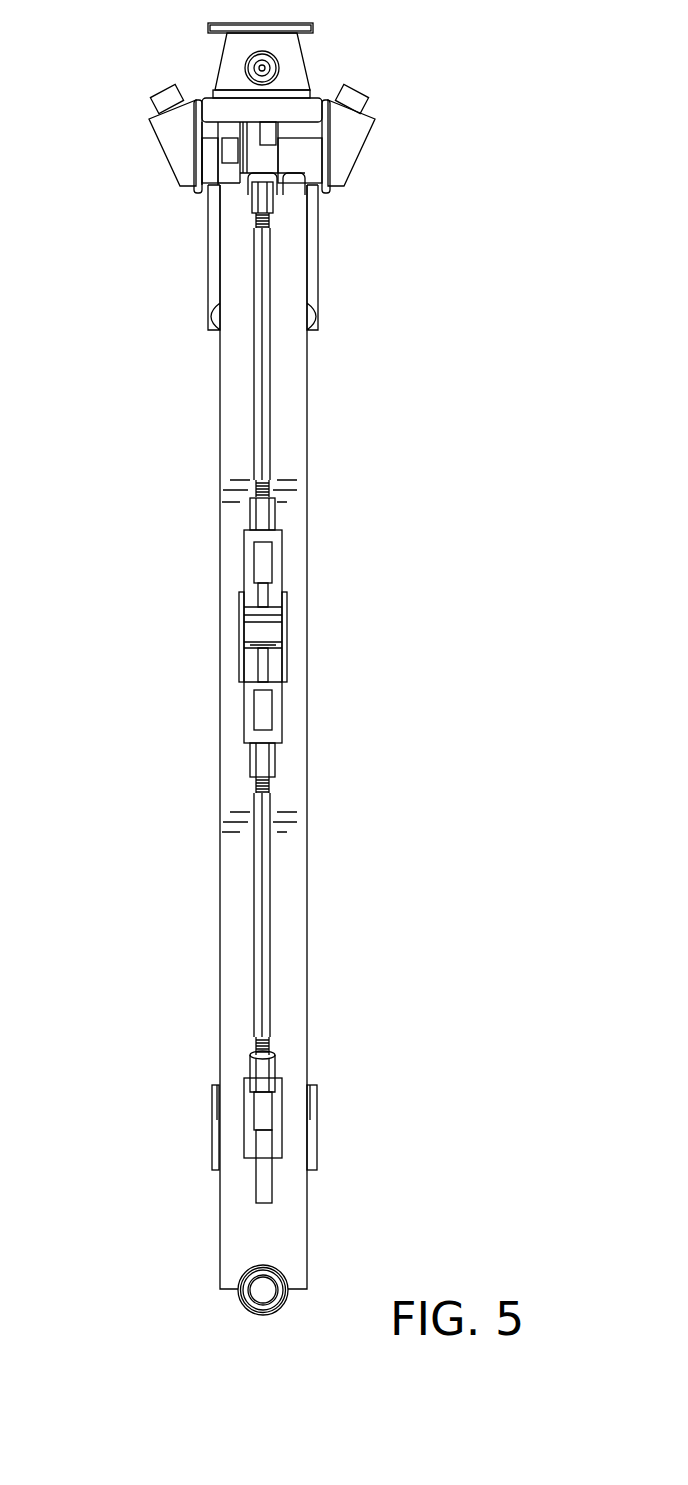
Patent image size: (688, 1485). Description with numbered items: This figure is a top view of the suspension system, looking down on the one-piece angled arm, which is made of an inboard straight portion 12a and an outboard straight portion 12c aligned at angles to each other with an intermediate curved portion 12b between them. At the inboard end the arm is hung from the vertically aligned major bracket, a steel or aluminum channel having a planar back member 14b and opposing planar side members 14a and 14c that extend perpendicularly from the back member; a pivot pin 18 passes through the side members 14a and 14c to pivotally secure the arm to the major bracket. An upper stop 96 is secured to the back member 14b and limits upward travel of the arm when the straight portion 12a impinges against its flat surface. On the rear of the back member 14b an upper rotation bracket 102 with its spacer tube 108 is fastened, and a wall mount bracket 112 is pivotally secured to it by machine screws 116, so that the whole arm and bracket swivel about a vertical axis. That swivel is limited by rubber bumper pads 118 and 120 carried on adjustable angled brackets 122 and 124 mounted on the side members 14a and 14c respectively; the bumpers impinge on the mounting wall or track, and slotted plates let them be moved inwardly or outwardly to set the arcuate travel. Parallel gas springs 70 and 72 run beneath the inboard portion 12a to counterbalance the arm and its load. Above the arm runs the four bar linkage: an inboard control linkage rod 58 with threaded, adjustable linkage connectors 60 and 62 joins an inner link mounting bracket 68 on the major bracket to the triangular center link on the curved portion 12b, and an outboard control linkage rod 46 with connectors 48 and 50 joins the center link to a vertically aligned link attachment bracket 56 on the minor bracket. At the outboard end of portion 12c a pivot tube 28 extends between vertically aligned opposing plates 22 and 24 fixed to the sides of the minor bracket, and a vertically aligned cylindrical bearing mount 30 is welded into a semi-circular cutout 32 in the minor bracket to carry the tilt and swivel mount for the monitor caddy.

The wall mount bracket 112 is at (310, 33).
The upper rotation bracket 102 is at (300, 83).
The spacer tube 108 is at (278, 61).
The planar back member 14b is at (207, 98).
The planar side member 14a is at (198, 188).
The planar side member 14c is at (327, 188).
The adjustable angled bracket 122 is at (165, 123).
The adjustable angled bracket 124 is at (358, 143).
The rubber bumper pad 118 is at (167, 100).
The rubber bumper pad 120 is at (364, 100).
The upper stop 96 is at (226, 148).
The pivot pin 18 is at (205, 165).
The inner link mounting bracket 68 is at (263, 136).
The machine screw 116 is at (312, 153).
The linkage connector 62 is at (263, 193).
The gas spring 70 is at (213, 263).
The gas spring 72 is at (312, 275).
The straight portion 12a is at (230, 385).
The intermediate curved portion 12b is at (237, 705).
The straight portion 12c is at (240, 942).
The inboard control linkage rod 58 is at (262, 368).
The linkage connector 60 is at (263, 507).
The linkage connector 48 is at (262, 758).
The outboard control linkage rod 46 is at (265, 915).
The linkage connector 50 is at (263, 1073).
The link attachment bracket 56 is at (263, 1175).
The plate 22 is at (213, 1132).
The plate 24 is at (313, 1140).
The pivot tube 28 is at (315, 1100).
The semi-circular cutout 32 is at (268, 1265).
The cylindrical bearing mount 30 is at (285, 1305).